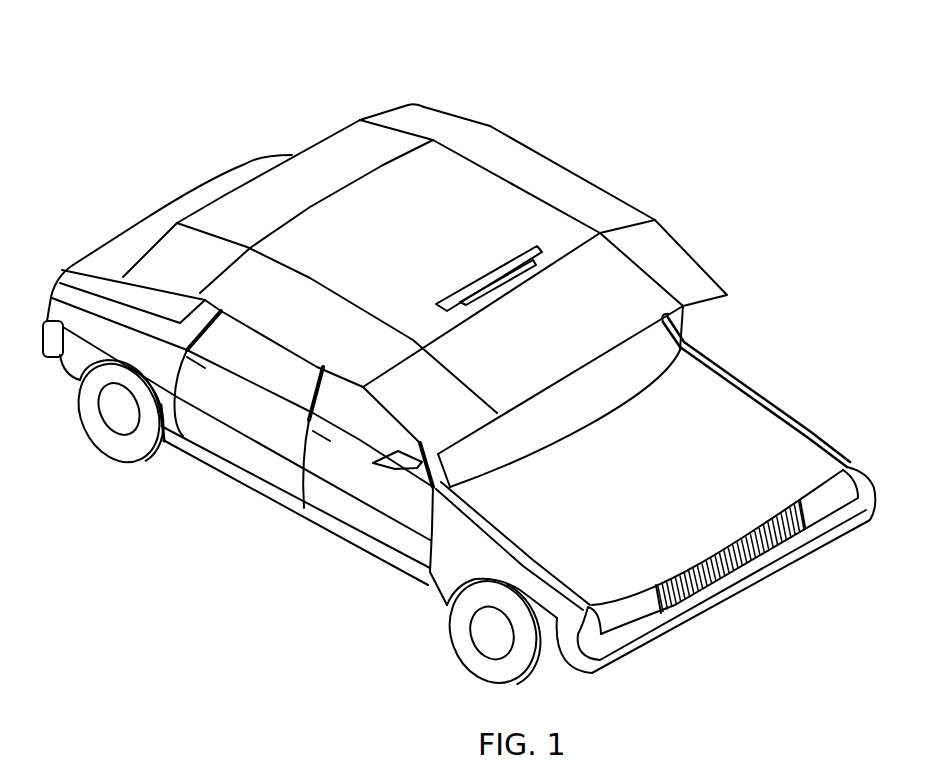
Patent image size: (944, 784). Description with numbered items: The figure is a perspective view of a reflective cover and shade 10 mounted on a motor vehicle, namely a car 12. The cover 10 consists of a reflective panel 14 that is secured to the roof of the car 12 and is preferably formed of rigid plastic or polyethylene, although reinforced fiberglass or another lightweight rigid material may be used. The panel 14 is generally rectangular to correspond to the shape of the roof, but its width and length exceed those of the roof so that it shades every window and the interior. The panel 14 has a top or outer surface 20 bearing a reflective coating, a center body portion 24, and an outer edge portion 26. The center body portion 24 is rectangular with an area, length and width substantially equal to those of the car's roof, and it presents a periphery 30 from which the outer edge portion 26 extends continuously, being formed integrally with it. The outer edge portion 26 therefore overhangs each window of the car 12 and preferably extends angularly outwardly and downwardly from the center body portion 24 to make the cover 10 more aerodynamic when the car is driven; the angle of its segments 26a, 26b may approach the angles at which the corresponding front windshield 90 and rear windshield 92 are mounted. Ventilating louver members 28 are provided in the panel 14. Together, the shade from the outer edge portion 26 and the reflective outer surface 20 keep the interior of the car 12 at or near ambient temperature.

The reflective cover and shade 10 is at (474, 88).
The car 12 is at (759, 377).
The reflective panel 14 is at (563, 147).
The top or outer surface 20 is at (433, 239).
The center body portion 24 is at (423, 177).
The outer edge portion 26 is at (223, 218).
The segment of outer edge portion 26a is at (481, 310).
The segment of outer edge portion 26b is at (316, 216).
The ventilating louver members 28 is at (560, 233).
The periphery 30 is at (378, 161).
The front windshield 90 is at (577, 414).
The rear windshield 92 is at (73, 266).